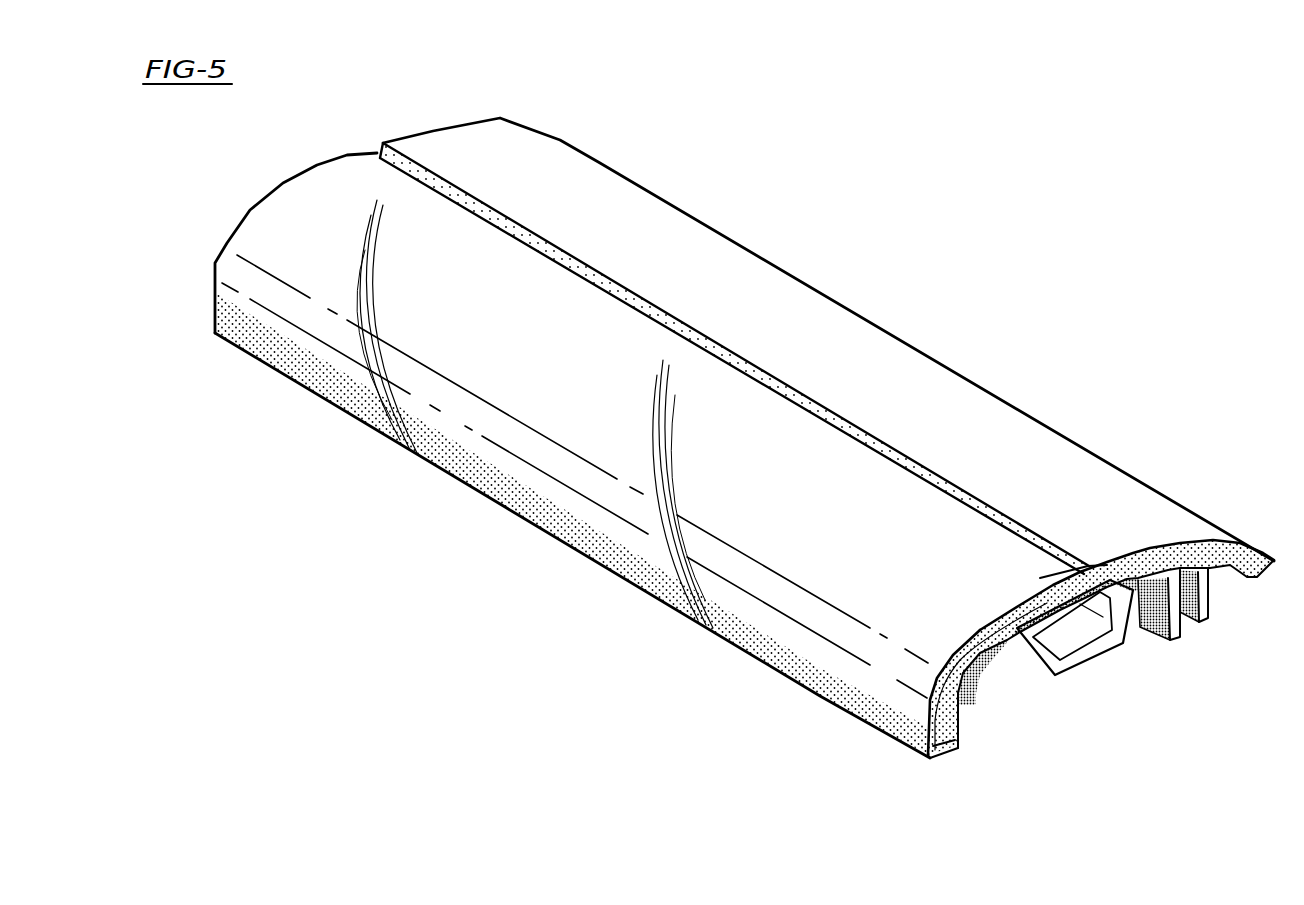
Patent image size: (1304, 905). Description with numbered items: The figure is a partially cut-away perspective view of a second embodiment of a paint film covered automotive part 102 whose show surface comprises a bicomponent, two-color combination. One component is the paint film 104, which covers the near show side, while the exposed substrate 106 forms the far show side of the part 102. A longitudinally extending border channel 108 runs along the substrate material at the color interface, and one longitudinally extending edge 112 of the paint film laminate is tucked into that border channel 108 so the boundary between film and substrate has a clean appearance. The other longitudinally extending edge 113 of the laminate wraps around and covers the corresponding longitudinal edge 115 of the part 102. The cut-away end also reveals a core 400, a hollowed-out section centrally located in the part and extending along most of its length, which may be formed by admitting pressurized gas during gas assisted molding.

The automotive part 102 is at (616, 586).
The paint film 104 is at (822, 460).
The exposed substrate 106 is at (1187, 540).
The border channel 108 is at (942, 486).
The longitudinally extending edge of the paint film laminate 112 is at (1105, 566).
The other longitudinally extending edge of the laminate 113 is at (932, 757).
The longitudinal edge of the part 115 is at (947, 705).
The core 400 is at (1075, 633).